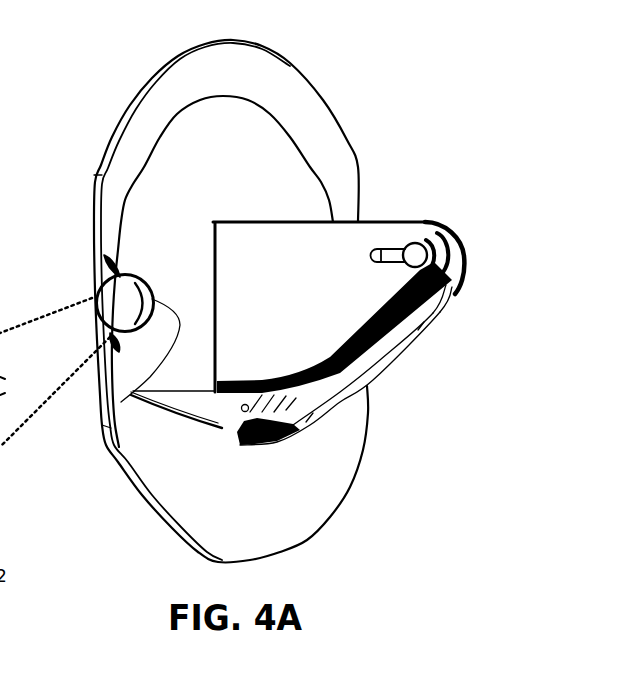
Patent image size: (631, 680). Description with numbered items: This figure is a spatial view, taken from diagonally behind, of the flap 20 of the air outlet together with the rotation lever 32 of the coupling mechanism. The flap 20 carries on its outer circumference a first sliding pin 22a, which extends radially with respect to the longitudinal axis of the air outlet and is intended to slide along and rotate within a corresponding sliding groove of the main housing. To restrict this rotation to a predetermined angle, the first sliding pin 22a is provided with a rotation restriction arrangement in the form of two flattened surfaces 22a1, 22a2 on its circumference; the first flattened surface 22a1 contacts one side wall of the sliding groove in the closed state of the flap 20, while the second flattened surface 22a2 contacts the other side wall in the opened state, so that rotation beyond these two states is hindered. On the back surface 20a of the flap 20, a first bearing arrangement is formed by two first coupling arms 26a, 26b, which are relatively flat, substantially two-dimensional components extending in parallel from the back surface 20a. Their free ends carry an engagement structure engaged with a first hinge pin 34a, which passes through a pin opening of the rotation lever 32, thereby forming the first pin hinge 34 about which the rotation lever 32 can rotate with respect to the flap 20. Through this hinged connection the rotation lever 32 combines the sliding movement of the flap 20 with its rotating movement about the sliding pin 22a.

The flap 20 is at (162, 91).
The back surface 20a is at (279, 166).
The first sliding pin 22a is at (105, 302).
The first flattened surface 22a1 is at (112, 262).
The second flattened surface 22a2 is at (178, 335).
The first coupling arm 26a is at (363, 234).
The first coupling arm 26b is at (463, 231).
The rotation lever 32 is at (380, 345).
The first pin hinge 34 is at (480, 250).
The first hinge pin 34a is at (443, 295).